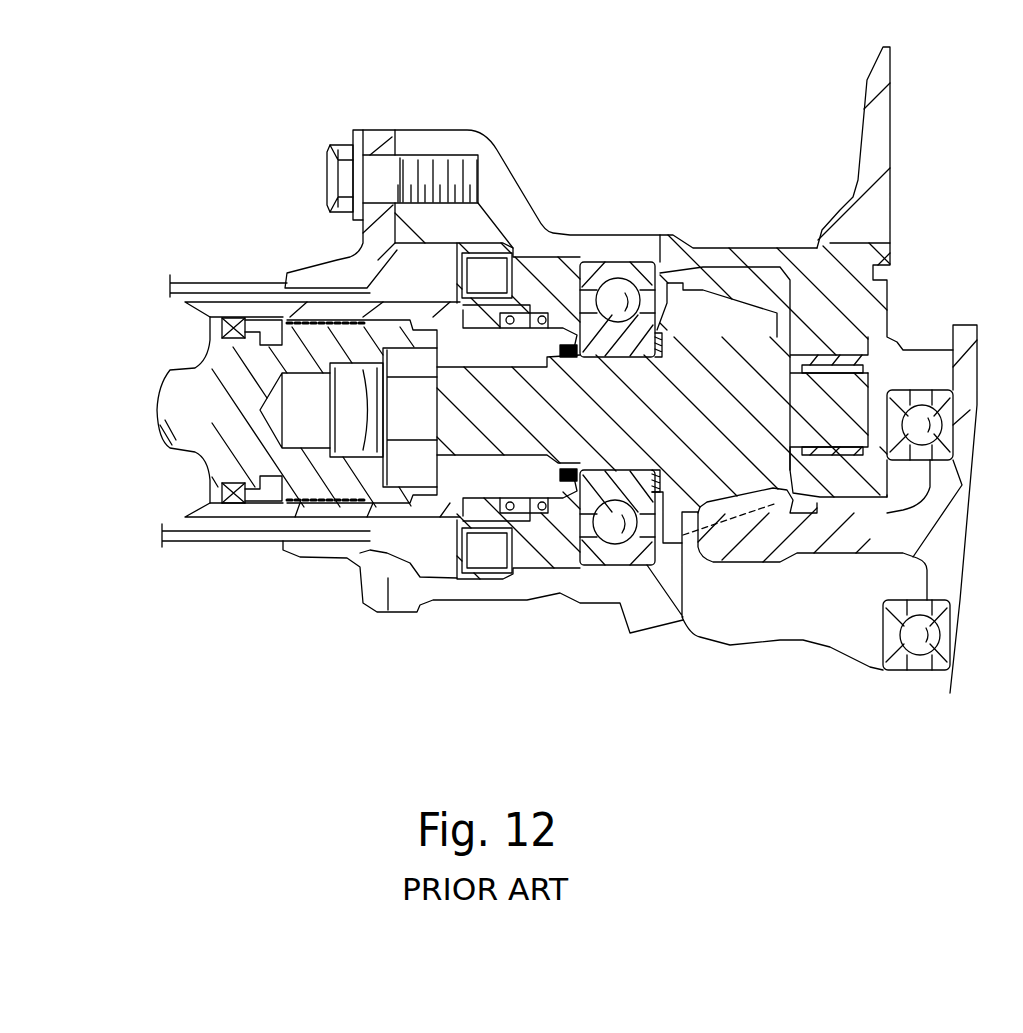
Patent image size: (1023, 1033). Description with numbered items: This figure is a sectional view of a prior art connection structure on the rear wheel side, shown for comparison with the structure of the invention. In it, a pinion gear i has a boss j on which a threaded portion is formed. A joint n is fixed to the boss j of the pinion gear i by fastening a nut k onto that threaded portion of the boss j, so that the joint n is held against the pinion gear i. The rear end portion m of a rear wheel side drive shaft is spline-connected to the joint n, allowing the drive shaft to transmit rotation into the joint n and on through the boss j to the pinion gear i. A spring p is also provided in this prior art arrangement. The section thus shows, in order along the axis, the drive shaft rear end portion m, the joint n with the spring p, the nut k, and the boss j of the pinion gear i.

The pinion gear i is at (700, 367).
The boss j is at (537, 417).
The nut k is at (412, 425).
The rear end portion of rear wheel side drive shaft m is at (252, 468).
The joint n is at (242, 450).
The spring p is at (353, 452).